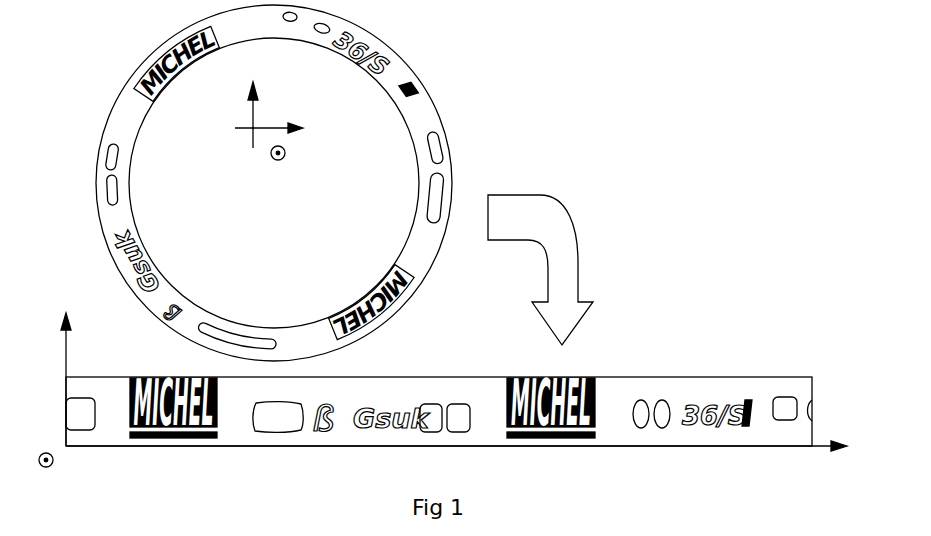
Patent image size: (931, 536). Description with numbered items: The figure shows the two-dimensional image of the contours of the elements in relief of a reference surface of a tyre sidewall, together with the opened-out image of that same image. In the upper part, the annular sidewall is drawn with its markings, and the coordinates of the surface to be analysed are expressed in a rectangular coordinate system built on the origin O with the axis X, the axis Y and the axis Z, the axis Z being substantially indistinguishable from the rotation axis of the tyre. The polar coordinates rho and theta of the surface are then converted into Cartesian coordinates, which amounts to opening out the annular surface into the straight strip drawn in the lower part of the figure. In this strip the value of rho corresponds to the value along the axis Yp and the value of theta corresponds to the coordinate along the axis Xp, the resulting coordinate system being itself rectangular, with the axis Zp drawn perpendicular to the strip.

The origin O is at (243, 120).
The axis OX X is at (269, 121).
The axis OY Y is at (256, 112).
The axis OZ Z is at (285, 156).
The axis OX' Xp is at (457, 461).
The axis OY' Yp is at (54, 379).
The Z axis of unwrapped sidewall strip Zp is at (53, 467).